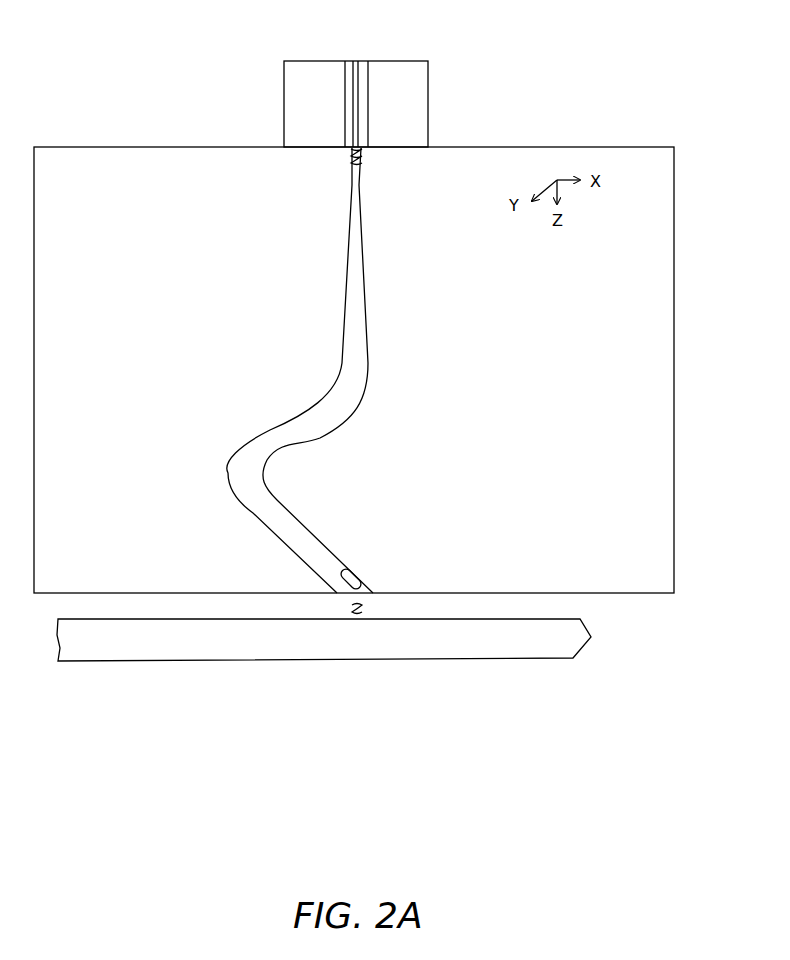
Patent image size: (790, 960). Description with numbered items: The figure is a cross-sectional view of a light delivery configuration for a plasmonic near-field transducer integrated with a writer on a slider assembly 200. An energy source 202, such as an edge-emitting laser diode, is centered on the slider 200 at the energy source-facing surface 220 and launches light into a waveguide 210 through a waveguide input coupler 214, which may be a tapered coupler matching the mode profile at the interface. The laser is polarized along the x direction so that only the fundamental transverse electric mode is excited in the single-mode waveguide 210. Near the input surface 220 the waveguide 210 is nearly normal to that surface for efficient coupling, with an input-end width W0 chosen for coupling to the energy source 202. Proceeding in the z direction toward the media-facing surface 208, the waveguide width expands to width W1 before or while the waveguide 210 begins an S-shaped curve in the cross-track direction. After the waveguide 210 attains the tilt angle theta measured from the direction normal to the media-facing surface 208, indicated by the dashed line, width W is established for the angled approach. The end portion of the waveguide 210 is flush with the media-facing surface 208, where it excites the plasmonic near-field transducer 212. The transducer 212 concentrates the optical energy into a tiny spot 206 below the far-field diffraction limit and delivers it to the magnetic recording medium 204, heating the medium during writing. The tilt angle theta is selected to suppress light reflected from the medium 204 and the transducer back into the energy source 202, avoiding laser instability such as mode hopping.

The slider assembly 200 is at (125, 46).
The energy source 202 is at (373, 102).
The magnetic recording medium 204 is at (324, 640).
The tiny spot 206 is at (359, 611).
The media-facing surface 208 is at (532, 591).
The waveguide 210 is at (366, 262).
The plasmonic near-field transducer 212 is at (336, 584).
The waveguide input coupler 214 is at (349, 154).
The energy source-facing surface 220 is at (98, 144).
The width at the input end of the waveguide W0 is at (338, 172).
The expanded waveguide width W1 is at (323, 365).
The waveguide width at tilt angle W is at (260, 567).
The tilt angle theta is at (385, 505).